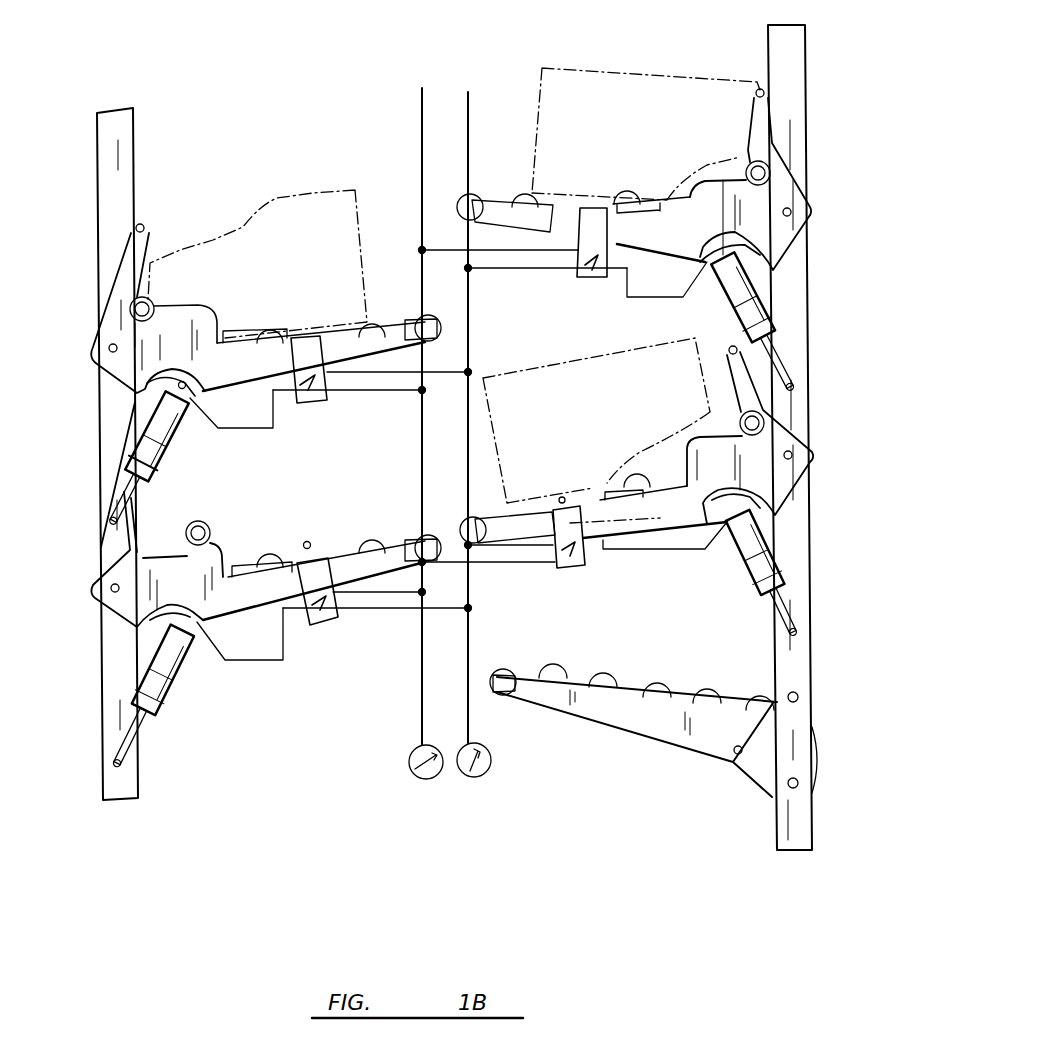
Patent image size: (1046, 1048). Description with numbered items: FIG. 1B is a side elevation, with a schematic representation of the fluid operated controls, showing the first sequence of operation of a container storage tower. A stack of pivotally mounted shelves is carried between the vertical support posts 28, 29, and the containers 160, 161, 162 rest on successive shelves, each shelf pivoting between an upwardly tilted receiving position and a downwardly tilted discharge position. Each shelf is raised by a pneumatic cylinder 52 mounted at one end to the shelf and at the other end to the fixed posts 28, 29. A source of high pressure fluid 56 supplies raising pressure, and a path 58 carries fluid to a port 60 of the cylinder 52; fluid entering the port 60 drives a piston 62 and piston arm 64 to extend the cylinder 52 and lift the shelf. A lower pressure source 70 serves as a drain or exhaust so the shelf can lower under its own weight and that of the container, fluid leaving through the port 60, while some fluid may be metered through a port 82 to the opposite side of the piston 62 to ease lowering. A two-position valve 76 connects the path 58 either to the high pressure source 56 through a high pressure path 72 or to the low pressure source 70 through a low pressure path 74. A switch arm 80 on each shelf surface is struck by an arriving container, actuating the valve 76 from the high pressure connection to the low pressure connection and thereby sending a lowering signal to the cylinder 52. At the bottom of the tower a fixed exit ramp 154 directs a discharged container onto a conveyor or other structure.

The post 28 is at (136, 118).
The post 29 is at (768, 44).
The pneumatic cylinder 52 is at (449, 512).
The source of high pressure fluid 56 is at (422, 722).
The path 58 is at (652, 300).
The port 60 is at (196, 398).
The piston 62 is at (138, 434).
The piston arm 64 is at (115, 487).
The lower pressure source 70 is at (473, 722).
The high pressure path 72 is at (449, 250).
The low pressure path 74 is at (468, 272).
The valve 76 is at (594, 282).
The switch arm 80 is at (308, 543).
The port 82 is at (160, 468).
The fixed exit ramp 154 is at (640, 722).
The container 160 is at (547, 431).
The container 161 is at (232, 288).
The container 162 is at (594, 140).